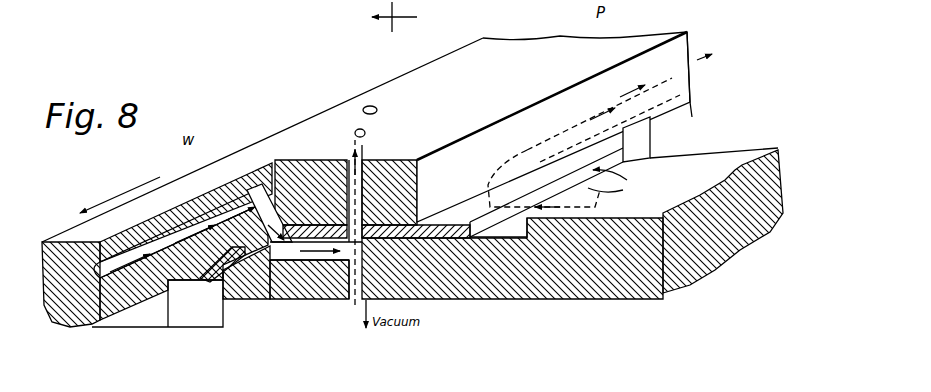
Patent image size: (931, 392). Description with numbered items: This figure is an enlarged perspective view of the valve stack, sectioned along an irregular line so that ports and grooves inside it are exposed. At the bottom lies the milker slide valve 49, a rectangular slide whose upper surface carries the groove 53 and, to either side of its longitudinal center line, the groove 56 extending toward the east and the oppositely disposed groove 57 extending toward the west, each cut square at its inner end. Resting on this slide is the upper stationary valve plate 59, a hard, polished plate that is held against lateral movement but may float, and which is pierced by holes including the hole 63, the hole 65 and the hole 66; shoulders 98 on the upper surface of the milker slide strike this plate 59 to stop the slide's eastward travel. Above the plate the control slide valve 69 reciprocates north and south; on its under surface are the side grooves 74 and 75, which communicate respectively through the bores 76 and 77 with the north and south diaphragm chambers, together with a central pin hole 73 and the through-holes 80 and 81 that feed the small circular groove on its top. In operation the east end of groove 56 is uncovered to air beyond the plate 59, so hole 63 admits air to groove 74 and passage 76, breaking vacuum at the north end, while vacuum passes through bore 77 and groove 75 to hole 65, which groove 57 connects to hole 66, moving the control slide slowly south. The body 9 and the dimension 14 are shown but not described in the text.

The body 9 is at (343, 182).
The dimension 14 is at (402, 17).
The milker slide valve 49 is at (707, 157).
The groove 53 is at (220, 282).
The groove 56 is at (622, 191).
The groove 57 is at (333, 258).
The upper stationary valve plate 59 is at (688, 104).
The hole 63 is at (552, 96).
The hole 65 is at (283, 240).
The hole 66 is at (365, 240).
The control slide valve 69 is at (640, 46).
The pin hole 73 is at (366, 132).
The side groove 74 is at (522, 133).
The side groove 75 is at (278, 195).
The bore 76 is at (687, 32).
The bore 77 is at (100, 243).
The through-hole 80 is at (364, 158).
The through-hole 81 is at (377, 108).
The shoulders 98 is at (657, 148).